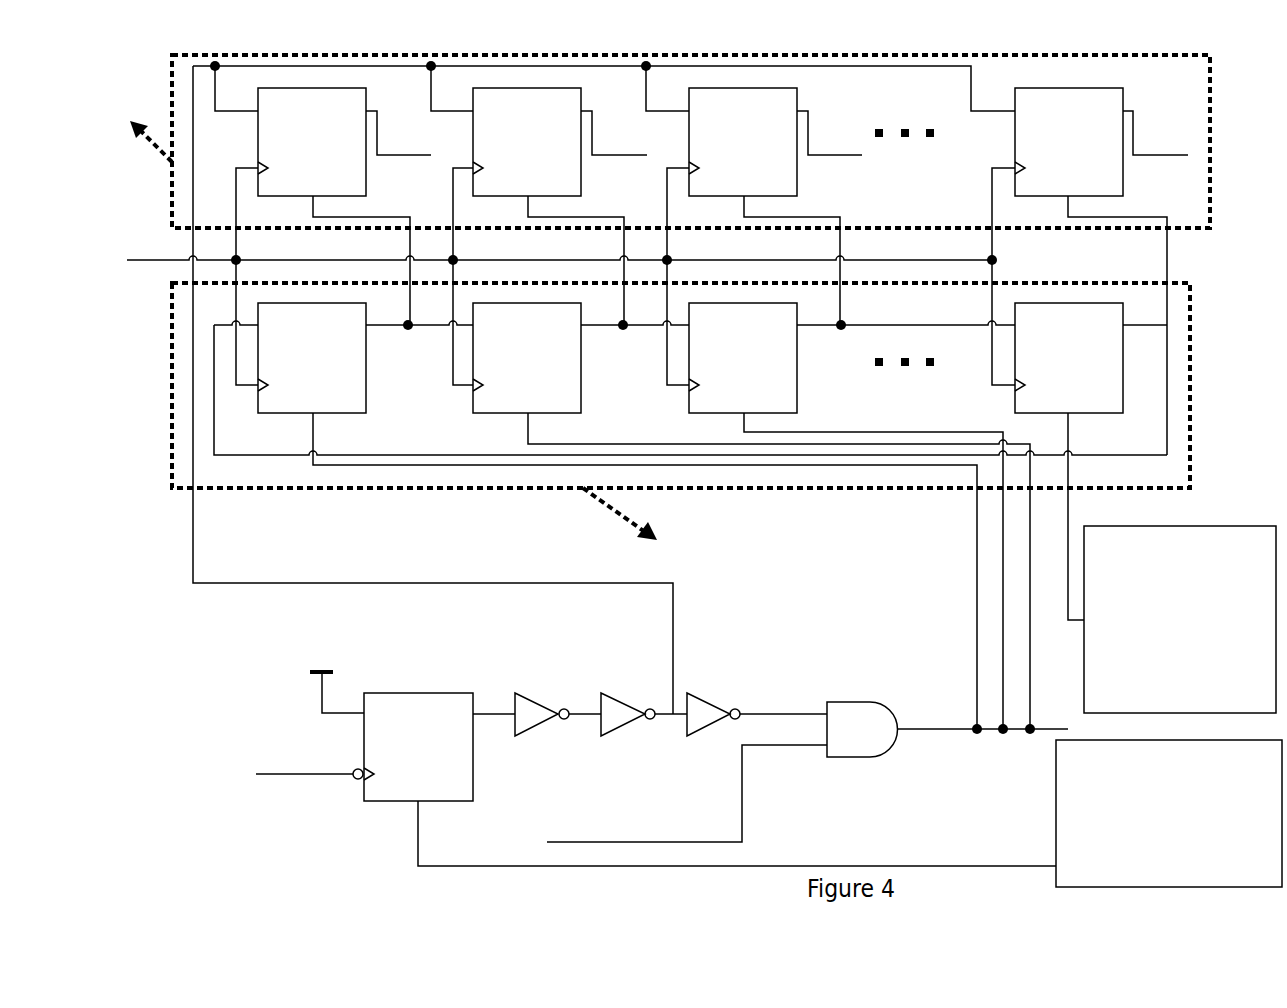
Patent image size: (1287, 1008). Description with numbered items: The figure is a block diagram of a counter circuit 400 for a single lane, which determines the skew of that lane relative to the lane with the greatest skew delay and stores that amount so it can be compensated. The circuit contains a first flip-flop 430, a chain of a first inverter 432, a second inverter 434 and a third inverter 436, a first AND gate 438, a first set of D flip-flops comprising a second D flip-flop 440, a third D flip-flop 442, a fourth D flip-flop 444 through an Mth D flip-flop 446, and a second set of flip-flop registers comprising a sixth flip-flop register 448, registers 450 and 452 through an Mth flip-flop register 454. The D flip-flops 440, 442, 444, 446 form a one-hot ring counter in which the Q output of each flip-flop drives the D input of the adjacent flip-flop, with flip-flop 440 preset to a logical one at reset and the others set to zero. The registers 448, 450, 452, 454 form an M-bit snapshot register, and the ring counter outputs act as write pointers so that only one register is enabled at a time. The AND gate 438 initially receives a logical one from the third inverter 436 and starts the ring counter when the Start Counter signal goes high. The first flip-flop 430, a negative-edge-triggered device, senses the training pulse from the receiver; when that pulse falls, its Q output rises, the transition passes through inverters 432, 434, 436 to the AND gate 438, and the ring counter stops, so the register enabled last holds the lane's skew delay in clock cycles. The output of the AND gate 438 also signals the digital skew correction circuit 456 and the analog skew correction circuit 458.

The counter circuit 400 is at (660, 471).
The first flip-flop 430 is at (440, 758).
The first inverter gate 432 is at (558, 685).
The second inverter gate 434 is at (644, 685).
The third inverter gate 436 is at (757, 685).
The first AND gate 438 is at (882, 735).
The second D flip-flop 440 is at (333, 371).
The third D flip-flop 442 is at (548, 371).
The fourth D flip-flop 444 is at (764, 371).
The Mth D flip-flop 446 is at (1090, 371).
The sixth flip-flop register 448 is at (333, 153).
The flip-flop register 450 is at (548, 153).
The flip-flop register 452 is at (764, 153).
The Mth flip-flop register 454 is at (1090, 153).
The digital skew correction circuit 456 is at (1138, 697).
The analog skew correction circuit 458 is at (1113, 878).